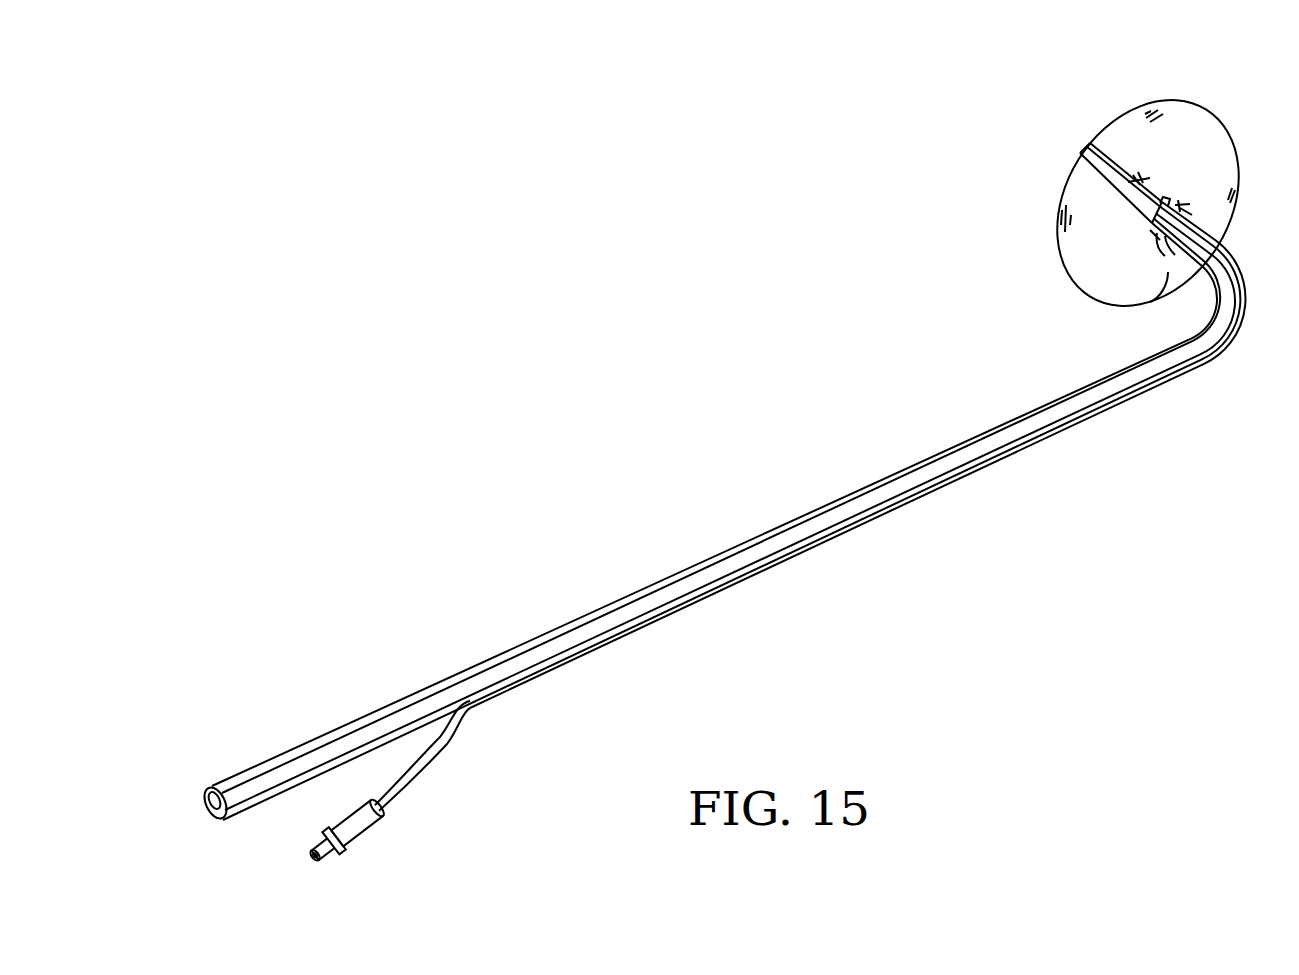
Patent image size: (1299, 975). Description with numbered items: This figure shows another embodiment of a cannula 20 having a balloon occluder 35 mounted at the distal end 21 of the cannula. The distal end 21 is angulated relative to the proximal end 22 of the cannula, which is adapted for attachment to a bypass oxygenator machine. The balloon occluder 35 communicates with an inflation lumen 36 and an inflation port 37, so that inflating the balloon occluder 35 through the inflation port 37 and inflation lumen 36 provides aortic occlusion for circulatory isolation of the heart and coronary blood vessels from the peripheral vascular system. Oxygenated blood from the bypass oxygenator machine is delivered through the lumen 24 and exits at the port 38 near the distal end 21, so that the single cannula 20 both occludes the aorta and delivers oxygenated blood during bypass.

The catheter shaft 20 is at (645, 592).
The distal end 21 is at (1218, 113).
The proximal end 22 is at (208, 785).
The lumen 24 is at (790, 538).
The balloon occluder 35 is at (1093, 258).
The inflation lumen 36 is at (1110, 410).
The inflation port 37 is at (350, 845).
The port 38 is at (1080, 152).